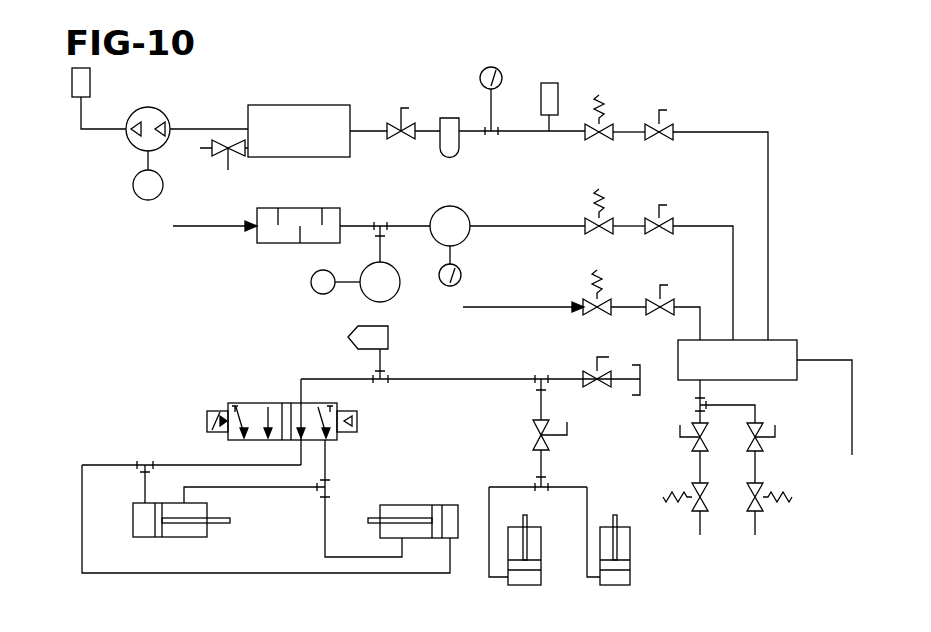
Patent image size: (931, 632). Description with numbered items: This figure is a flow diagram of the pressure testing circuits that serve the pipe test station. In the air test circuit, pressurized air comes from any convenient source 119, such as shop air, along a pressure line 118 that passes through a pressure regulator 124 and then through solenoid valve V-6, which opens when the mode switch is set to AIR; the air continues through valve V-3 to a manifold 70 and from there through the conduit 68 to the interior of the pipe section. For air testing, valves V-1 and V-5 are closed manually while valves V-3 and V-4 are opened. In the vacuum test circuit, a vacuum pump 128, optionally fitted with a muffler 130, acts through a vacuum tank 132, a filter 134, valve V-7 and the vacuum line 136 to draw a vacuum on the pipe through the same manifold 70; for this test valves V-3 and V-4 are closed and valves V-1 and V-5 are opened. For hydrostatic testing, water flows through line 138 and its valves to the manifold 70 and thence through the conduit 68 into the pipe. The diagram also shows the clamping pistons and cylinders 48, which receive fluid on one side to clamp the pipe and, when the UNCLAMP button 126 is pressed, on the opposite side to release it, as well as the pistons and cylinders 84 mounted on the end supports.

The muffler 130 is at (72, 86).
The vacuum pump 128 is at (163, 88).
The vacuum tank 132 is at (305, 92).
The filter 134 is at (450, 118).
The vacuum line 136 is at (768, 187).
The source 119 is at (205, 226).
The pressure regulator 124 is at (407, 256).
The pressure line 118 is at (490, 230).
The line 138 is at (532, 310).
The manifold 70 is at (783, 338).
The conduit 68 is at (852, 428).
The UNCLAMP button 126 is at (207, 419).
The piston and cylinder 48 is at (168, 538).
The piston and cylinder 84 is at (594, 599).
The valve V7 V-7 is at (590, 140).
The valve V1 V-1 is at (661, 141).
The solenoid valve V6 V-6 is at (588, 222).
The valve V3 V-3 is at (668, 222).
The valve V4 V-4 is at (695, 445).
The valve V5 V-5 is at (758, 426).